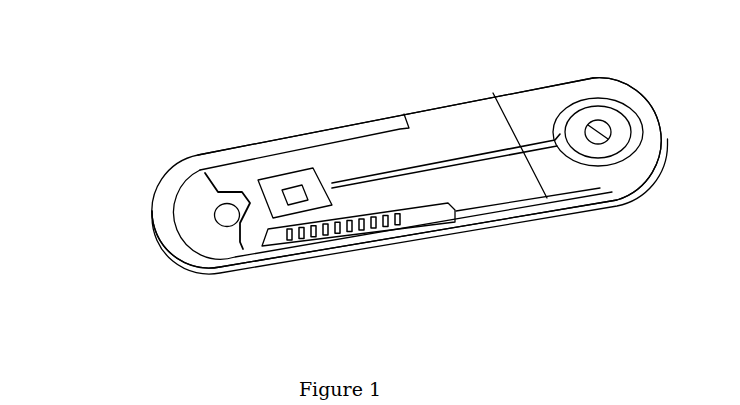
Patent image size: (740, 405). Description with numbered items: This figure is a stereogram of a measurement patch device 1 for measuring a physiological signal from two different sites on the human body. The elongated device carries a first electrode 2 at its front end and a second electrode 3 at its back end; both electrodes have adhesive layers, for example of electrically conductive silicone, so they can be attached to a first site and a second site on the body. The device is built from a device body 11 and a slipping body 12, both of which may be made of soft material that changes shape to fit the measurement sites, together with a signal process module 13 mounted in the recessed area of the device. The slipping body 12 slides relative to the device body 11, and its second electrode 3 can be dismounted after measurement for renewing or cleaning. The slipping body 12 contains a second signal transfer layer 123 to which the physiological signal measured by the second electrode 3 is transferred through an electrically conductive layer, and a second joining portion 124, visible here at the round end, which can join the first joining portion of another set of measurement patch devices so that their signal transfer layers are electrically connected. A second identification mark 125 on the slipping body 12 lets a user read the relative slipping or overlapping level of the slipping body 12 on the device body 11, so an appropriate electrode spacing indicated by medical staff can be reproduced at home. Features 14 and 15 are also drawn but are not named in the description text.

The measurement patch device 1 is at (349, 173).
The first electrode 2 is at (200, 268).
The second electrode 3 is at (628, 197).
The device body 11 is at (180, 167).
The slipping body 12 is at (435, 114).
The signal process module 13 is at (292, 188).
The through hole 14 is at (214, 214).
The connector socket 15 is at (276, 238).
The second signal transfer layer 123 is at (535, 142).
The second joining portion 124 is at (604, 118).
The second identification mark 125 is at (352, 237).